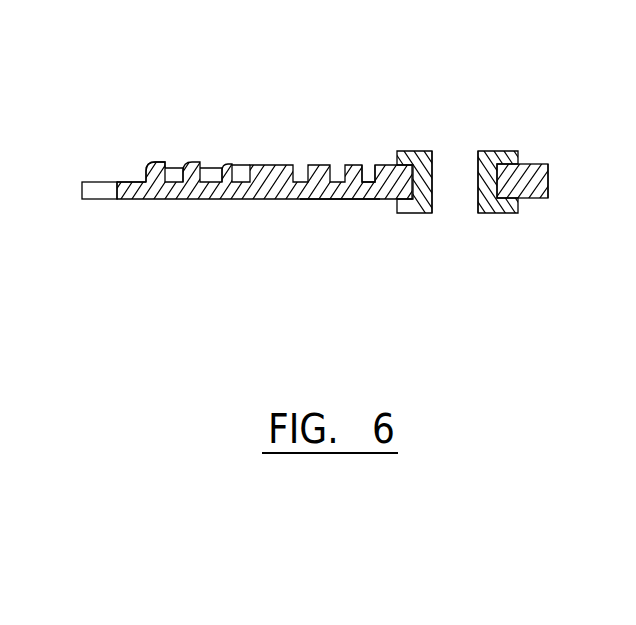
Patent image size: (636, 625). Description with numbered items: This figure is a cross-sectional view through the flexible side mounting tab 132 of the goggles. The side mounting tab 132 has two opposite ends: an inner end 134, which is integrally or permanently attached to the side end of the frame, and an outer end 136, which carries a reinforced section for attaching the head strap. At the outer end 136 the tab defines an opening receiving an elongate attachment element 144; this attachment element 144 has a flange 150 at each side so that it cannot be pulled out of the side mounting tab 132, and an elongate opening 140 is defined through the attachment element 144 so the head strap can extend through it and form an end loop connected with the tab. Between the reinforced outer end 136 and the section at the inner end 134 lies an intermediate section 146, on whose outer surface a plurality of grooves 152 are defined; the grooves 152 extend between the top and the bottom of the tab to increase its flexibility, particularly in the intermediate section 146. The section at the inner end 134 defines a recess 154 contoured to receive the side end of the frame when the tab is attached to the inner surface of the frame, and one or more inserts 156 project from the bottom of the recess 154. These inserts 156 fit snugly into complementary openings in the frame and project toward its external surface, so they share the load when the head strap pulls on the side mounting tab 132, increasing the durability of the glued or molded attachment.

The side mounting tab 132 is at (275, 293).
The inner end 134 is at (98, 182).
The outer end 136 is at (597, 233).
The elongate opening 140 is at (452, 162).
The elongate attachment element 144 is at (497, 150).
The intermediate section 146 is at (348, 292).
The flange 150 is at (585, 97).
The grooves 152 is at (370, 176).
The recess 154 is at (126, 182).
The inserts 156 is at (263, 100).